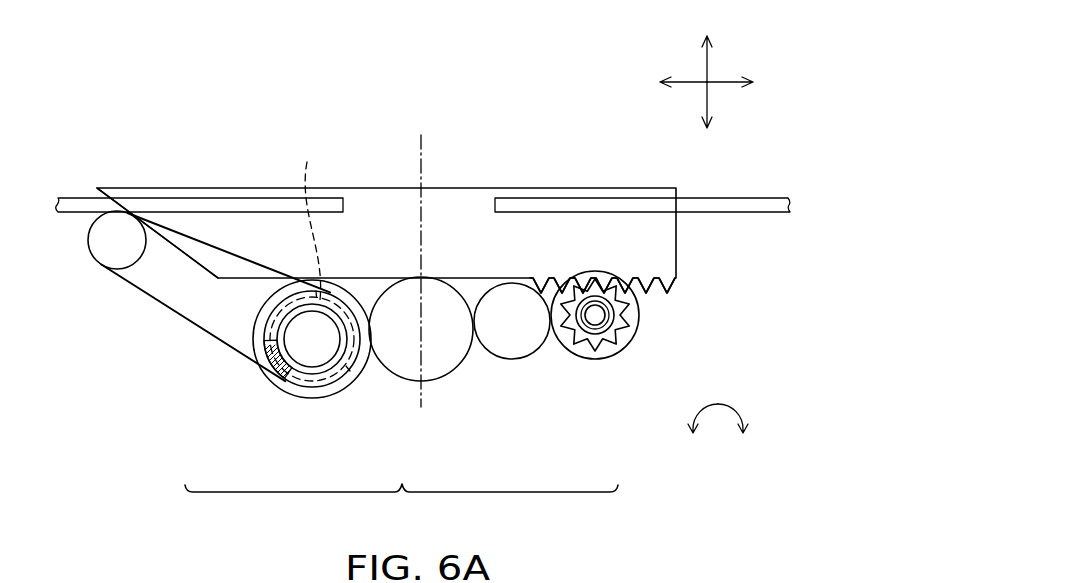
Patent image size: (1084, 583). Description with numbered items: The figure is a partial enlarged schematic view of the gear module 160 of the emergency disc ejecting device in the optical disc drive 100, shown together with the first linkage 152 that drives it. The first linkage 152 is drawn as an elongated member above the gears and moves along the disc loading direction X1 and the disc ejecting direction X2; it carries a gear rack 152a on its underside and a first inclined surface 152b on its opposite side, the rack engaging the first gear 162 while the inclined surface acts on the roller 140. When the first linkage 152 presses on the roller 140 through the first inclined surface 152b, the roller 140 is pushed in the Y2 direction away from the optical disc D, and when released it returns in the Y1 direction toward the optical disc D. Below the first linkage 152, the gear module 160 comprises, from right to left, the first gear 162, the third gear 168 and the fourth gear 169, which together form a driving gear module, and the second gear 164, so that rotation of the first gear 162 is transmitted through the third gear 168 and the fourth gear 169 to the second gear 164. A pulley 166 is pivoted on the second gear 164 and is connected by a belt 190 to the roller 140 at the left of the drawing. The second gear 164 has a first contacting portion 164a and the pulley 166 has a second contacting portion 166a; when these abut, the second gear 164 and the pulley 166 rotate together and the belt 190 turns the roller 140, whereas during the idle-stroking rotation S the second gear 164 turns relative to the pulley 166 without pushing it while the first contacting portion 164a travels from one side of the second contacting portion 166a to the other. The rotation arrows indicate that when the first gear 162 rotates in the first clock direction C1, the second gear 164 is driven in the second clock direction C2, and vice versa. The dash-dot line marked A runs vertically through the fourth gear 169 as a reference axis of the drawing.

The optical disc drive 100 is at (773, 522).
The roller 140 is at (105, 250).
The first linkage 152 is at (467, 210).
The gear rack 152a is at (672, 303).
The first inclined surface 152b is at (181, 262).
The gear module 160 is at (401, 505).
The first gear 162 is at (591, 320).
The second gear 164 is at (350, 392).
The first contacting portion 164a is at (300, 388).
The pulley 166 is at (268, 330).
The second contacting portion 166a is at (273, 370).
The third gear 168 is at (510, 346).
The fourth gear 169 is at (443, 365).
The belt 190 is at (160, 303).
The optical disc D is at (88, 203).
The idle-stroking rotation S is at (311, 216).
The axis A is at (422, 257).
The disc loading direction X1 is at (745, 83).
The disc ejecting direction X2 is at (667, 83).
The Y1 direction Y1 is at (707, 43).
The Y2 direction Y2 is at (707, 120).
The first clock direction C1 is at (735, 438).
The second clock direction C2 is at (700, 438).